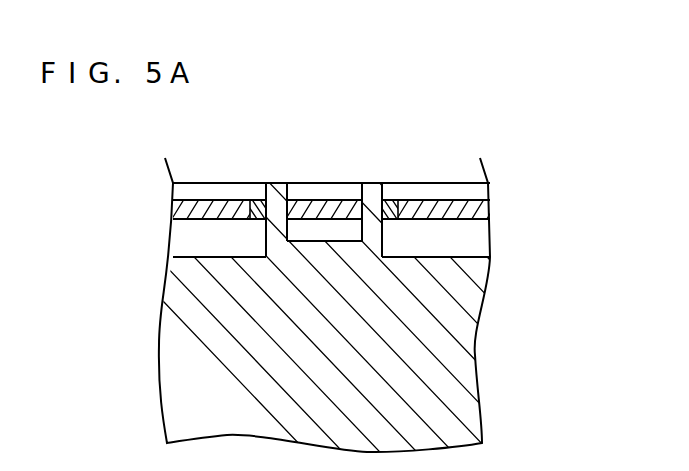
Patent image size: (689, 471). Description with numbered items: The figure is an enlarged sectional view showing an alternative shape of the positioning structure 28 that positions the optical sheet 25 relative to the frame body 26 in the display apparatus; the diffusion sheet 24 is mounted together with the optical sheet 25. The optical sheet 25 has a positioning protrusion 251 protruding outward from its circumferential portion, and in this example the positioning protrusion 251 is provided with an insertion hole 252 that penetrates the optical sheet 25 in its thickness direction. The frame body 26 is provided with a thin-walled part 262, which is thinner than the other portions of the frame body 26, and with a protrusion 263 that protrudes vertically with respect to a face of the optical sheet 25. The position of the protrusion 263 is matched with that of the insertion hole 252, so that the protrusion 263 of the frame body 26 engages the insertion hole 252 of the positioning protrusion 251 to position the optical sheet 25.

The diffusion sheet 24 is at (198, 183).
The optical sheet 25 is at (445, 378).
The frame body 26 is at (218, 202).
The positioning structure 28 is at (449, 151).
The positioning protrusion 251 is at (283, 187).
The insertion hole 252 is at (342, 228).
The thin-walled part 262 is at (263, 205).
The protrusion 263 is at (317, 200).